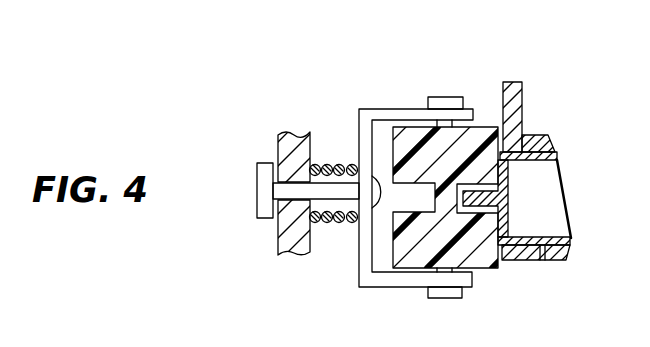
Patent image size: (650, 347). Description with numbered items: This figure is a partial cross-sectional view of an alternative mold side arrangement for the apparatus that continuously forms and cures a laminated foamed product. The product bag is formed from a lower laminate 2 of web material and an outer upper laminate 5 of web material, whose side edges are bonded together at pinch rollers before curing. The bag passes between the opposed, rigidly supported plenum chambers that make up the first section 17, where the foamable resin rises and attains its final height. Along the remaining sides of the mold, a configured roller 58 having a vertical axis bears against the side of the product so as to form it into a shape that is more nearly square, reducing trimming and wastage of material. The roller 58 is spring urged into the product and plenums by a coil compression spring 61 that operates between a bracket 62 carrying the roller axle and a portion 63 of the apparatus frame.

The lower laminate 2 is at (566, 228).
The outer upper laminate 5 is at (559, 162).
The first section 17 is at (536, 137).
The configured roller 58 is at (484, 127).
The coil compression spring 61 is at (344, 224).
The bracket 62 is at (369, 288).
The portion of the apparatus frame 63 is at (303, 257).